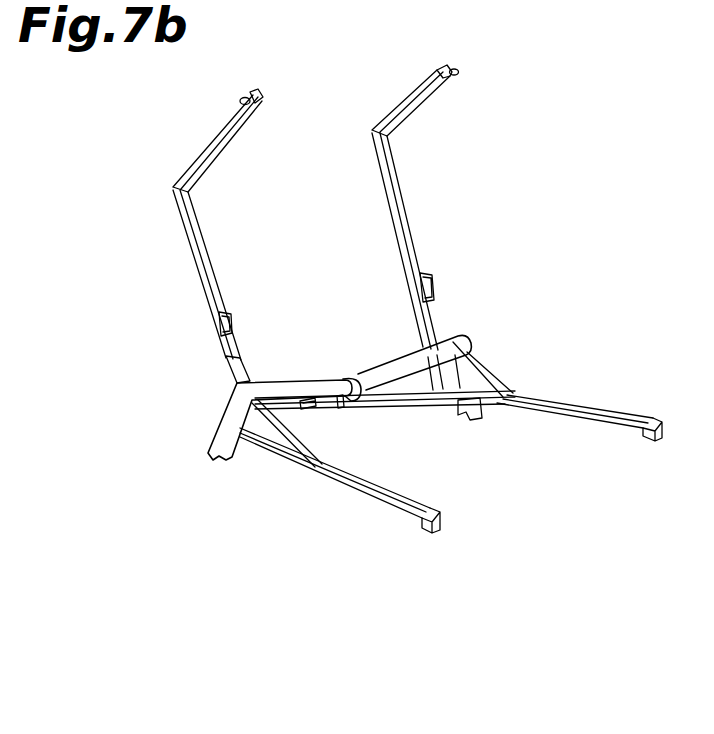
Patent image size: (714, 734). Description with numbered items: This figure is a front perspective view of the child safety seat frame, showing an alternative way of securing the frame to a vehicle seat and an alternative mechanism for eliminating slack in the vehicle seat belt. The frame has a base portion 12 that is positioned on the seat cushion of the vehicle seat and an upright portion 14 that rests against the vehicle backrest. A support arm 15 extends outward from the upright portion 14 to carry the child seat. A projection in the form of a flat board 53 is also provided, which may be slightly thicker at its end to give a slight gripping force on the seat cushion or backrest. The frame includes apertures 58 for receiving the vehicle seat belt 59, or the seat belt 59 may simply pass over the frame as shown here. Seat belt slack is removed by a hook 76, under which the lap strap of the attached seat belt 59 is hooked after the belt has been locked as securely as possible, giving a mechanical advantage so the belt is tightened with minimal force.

The base portion 12 is at (580, 403).
The upright portion 14 is at (202, 242).
The support arm 15 is at (212, 143).
The flat board 53 is at (327, 417).
The apertures 58 is at (228, 312).
The vehicle seat belt 59 is at (460, 340).
The hook 76 is at (343, 377).